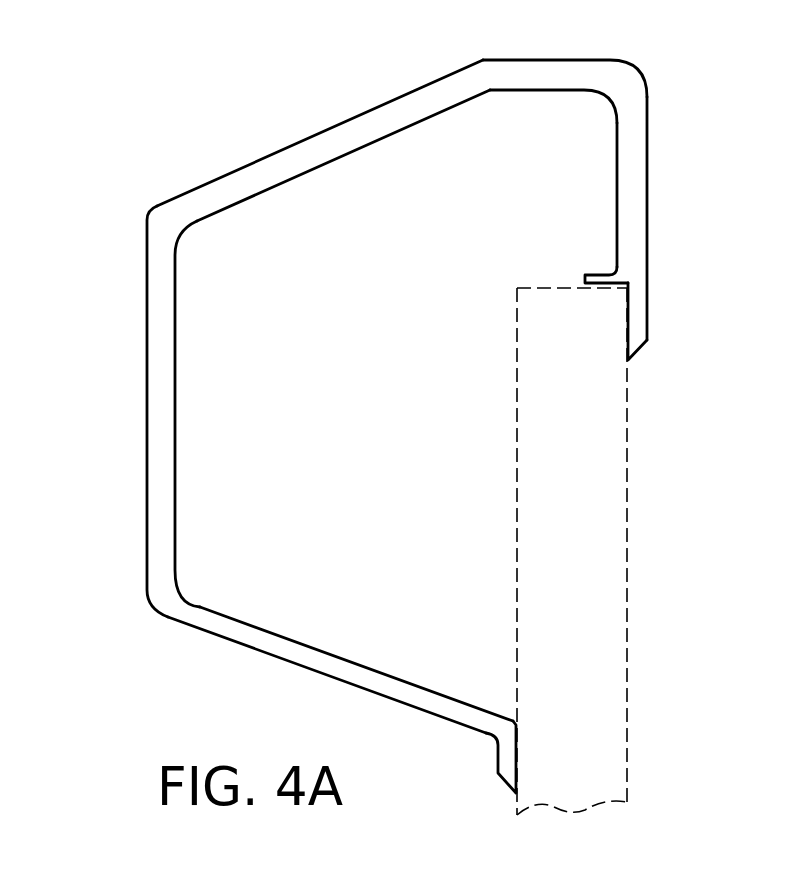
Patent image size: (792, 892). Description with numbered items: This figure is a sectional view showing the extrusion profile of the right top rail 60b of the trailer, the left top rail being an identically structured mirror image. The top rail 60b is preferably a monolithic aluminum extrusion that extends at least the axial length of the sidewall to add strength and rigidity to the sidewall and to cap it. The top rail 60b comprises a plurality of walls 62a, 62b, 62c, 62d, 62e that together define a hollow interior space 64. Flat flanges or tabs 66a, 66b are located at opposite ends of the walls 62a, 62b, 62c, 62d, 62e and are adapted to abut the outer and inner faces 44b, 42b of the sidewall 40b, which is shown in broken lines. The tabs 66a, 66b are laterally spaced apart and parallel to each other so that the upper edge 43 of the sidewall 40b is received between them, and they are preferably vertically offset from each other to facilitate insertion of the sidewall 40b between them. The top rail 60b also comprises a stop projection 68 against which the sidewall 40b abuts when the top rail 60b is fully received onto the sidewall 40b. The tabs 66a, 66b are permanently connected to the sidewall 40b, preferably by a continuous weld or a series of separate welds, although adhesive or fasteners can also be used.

The right top rail 60b is at (260, 148).
The wall 62a is at (620, 198).
The wall 62b is at (552, 82).
The wall 62c is at (317, 160).
The wall 62d is at (160, 422).
The wall 62e is at (345, 673).
The hollow interior space 64 is at (219, 503).
The flat flange/tab 66a is at (647, 339).
The flat flange/tab 66b is at (508, 755).
The stop projection 68 is at (598, 272).
The right sidewall 40b is at (535, 617).
The inner face of sidewall 42b is at (507, 697).
The upper edge of sidewall 43 is at (544, 441).
The outer face of sidewall 44b is at (641, 744).